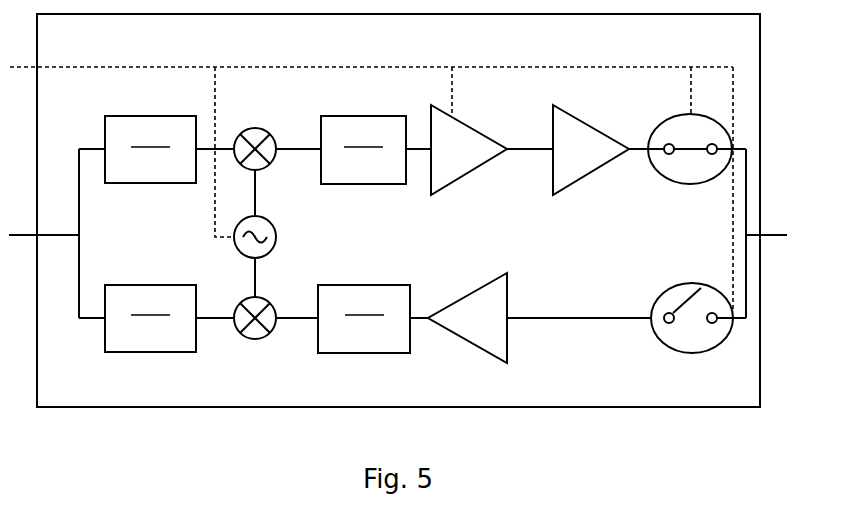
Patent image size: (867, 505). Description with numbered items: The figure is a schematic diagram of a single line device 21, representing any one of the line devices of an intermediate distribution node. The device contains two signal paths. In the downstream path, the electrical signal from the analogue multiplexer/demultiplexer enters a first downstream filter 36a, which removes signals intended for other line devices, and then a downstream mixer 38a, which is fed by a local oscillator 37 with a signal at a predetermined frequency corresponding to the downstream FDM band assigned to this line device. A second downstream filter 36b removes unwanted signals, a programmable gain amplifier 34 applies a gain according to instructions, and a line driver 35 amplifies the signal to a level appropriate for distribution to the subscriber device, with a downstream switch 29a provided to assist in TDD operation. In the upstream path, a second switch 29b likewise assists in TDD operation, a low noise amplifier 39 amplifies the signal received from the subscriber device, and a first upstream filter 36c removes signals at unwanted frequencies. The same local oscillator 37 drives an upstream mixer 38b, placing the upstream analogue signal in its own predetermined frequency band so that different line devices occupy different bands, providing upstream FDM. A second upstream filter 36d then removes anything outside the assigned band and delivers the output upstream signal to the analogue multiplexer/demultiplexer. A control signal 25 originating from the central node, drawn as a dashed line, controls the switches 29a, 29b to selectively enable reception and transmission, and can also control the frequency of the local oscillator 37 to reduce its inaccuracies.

The line device 21 is at (383, 45).
The control signal 25 is at (76, 70).
The first downstream filter 36a is at (150, 149).
The second downstream filter 36b is at (363, 150).
The first upstream filter 36c is at (364, 319).
The second upstream filter 36d is at (150, 318).
The downstream mixer 38a is at (271, 129).
The upstream mixer 38b is at (271, 299).
The local oscillator 37 is at (270, 219).
The programmable gain amplifier 34 is at (478, 128).
The line driver 35 is at (601, 130).
The low noise amplifier 39 is at (462, 338).
The downstream switch 29a is at (657, 172).
The second switch 29b is at (657, 335).